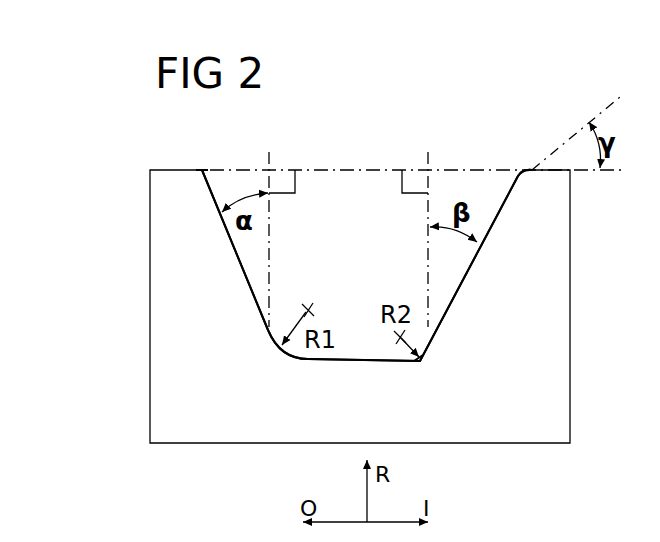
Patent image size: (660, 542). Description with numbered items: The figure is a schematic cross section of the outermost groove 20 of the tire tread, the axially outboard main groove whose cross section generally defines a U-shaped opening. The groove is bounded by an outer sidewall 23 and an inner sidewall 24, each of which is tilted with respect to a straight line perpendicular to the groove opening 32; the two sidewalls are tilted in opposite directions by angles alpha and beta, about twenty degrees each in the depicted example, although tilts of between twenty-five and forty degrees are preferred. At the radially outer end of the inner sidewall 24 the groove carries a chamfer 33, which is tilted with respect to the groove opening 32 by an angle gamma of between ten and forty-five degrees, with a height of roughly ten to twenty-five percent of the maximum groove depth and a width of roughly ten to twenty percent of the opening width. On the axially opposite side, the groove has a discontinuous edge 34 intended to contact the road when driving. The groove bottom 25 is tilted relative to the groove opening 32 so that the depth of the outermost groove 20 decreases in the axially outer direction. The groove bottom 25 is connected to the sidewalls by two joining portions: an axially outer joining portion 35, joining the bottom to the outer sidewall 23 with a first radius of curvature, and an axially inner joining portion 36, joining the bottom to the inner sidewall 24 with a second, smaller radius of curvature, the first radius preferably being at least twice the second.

The outermost groove 20 is at (366, 136).
The outer sidewall 23 is at (243, 273).
The inner sidewall 24 is at (466, 278).
The groove bottom 25 is at (333, 363).
The groove opening 32 is at (356, 172).
The chamfer 33 is at (513, 183).
The discontinuous edge 34 is at (199, 176).
The axially outer joining portion 35 is at (274, 345).
The axially inner joining portion 36 is at (424, 362).